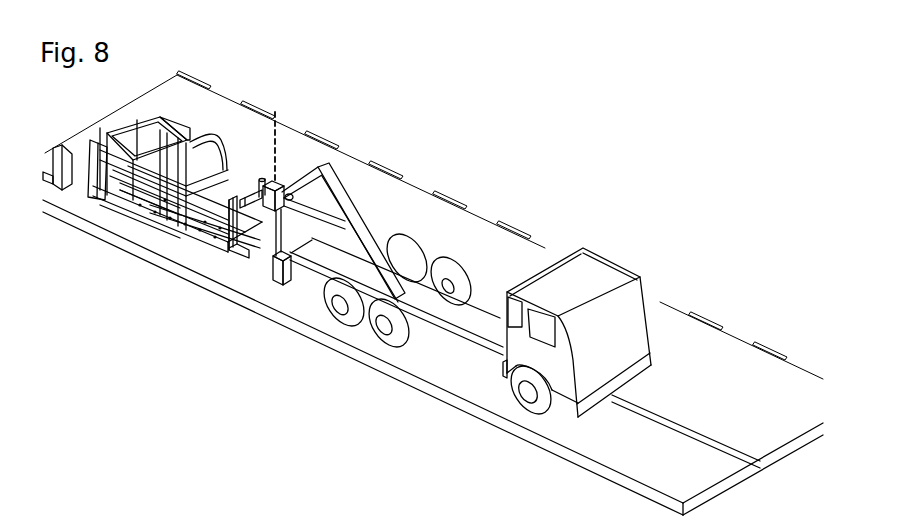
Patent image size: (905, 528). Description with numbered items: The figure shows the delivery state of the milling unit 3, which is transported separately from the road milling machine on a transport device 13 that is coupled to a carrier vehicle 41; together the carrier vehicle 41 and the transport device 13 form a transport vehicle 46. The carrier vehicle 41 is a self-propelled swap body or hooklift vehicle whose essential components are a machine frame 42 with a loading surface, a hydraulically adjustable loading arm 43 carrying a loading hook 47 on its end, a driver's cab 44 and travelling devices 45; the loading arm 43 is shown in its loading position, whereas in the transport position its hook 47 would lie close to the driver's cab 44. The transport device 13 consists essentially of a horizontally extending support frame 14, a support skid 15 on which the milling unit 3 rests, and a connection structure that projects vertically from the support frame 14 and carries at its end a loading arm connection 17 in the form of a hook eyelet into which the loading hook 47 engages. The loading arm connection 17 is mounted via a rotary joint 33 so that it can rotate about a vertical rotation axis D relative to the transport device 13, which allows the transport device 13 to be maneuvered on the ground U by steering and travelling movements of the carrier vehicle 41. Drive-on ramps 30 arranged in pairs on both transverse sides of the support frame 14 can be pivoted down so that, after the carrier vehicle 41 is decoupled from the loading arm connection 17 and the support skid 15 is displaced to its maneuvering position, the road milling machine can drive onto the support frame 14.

The milling unit 3 is at (177, 190).
The transport device 13 is at (195, 97).
The support frame 14 is at (222, 240).
The support skid 15 is at (140, 197).
The loading arm connection 17 is at (247, 207).
The drive-on ramps 30 is at (115, 128).
The rotary joint 33 is at (282, 193).
The carrier vehicle 41 is at (474, 258).
The machine frame 42 is at (458, 327).
The loading arm 43 is at (340, 205).
The driver's cab 44 is at (635, 312).
The travelling devices 45 is at (387, 327).
The transport vehicle 46 is at (534, 121).
The loading hook 47 is at (291, 199).
The vertical rotation axis D is at (277, 134).
The base platform U is at (593, 463).